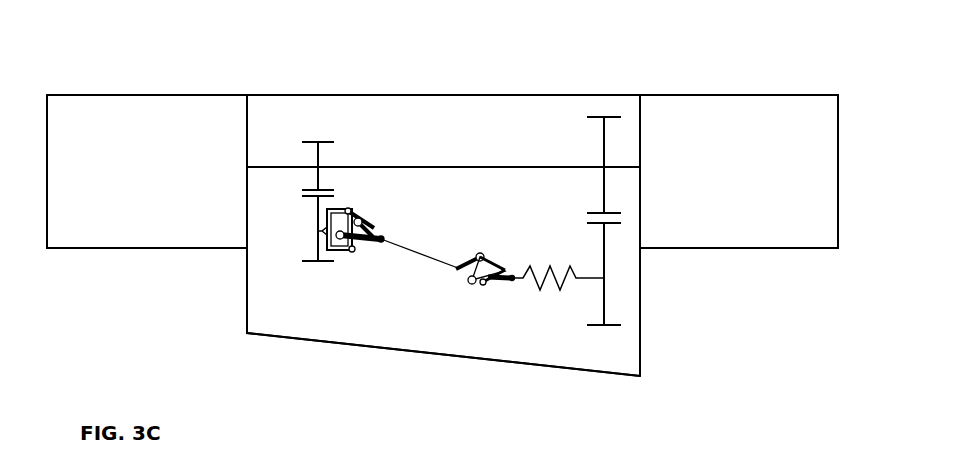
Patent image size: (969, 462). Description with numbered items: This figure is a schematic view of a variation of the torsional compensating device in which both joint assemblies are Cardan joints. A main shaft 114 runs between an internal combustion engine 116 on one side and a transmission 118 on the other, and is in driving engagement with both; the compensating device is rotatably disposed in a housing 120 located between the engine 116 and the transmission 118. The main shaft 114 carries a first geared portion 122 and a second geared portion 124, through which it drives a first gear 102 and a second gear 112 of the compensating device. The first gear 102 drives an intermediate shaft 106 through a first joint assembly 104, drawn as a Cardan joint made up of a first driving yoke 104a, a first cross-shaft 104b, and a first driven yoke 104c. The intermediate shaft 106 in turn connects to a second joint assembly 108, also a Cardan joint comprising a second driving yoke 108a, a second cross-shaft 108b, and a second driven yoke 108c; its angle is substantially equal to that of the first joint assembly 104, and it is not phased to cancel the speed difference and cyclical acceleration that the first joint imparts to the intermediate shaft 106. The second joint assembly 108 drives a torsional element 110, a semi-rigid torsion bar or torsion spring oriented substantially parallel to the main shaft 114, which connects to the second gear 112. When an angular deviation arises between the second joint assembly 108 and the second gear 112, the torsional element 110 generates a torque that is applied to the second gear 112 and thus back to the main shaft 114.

The first gear 102 is at (314, 243).
The first joint assembly 104 is at (393, 254).
The first driving yoke 104a is at (343, 209).
The first cross-shaft 104b is at (362, 219).
The first driven yoke 104c is at (357, 245).
The intermediate shaft 106 is at (440, 256).
The second joint assembly 108 is at (501, 322).
The second driving yoke 108a is at (460, 283).
The second cross-shaft 108b is at (485, 285).
The second driven yoke 108c is at (502, 264).
The torsional element 110 is at (572, 283).
The second gear 112 is at (604, 290).
The main shaft 114 is at (457, 166).
The internal combustion engine 116 is at (157, 95).
The transmission 118 is at (742, 95).
The housing 120 is at (311, 340).
The first geared portion 122 is at (320, 157).
The second geared portion 124 is at (604, 143).